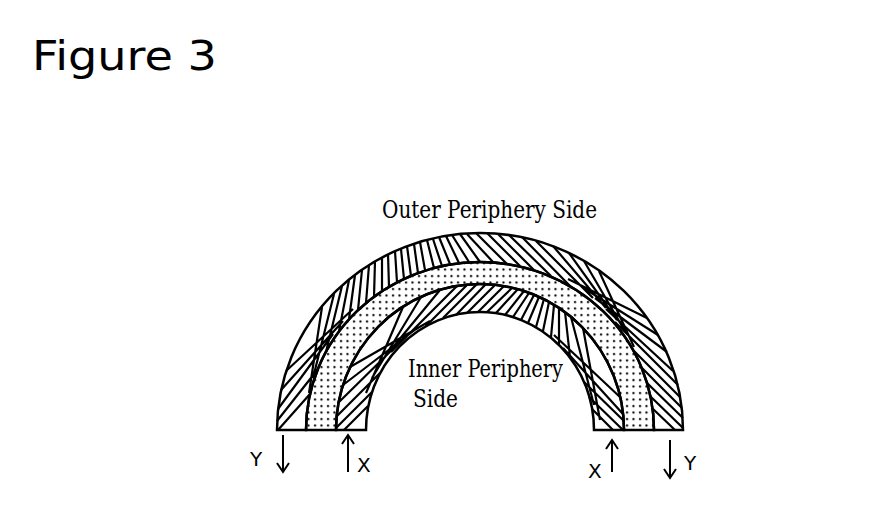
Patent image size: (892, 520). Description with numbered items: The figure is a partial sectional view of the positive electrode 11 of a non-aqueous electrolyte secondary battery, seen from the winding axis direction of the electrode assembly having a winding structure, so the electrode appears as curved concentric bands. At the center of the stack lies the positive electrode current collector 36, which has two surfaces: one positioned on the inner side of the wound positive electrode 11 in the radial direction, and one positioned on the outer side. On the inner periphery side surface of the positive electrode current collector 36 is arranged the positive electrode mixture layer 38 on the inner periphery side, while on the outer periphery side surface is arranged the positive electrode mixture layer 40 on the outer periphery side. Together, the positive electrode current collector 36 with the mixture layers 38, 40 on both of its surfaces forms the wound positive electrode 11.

The positive electrode 11 is at (309, 230).
The positive electrode current collector 36 is at (615, 335).
The positive electrode mixture layer on an inner periphery side 38 is at (567, 303).
The positive electrode mixture layer on an outer periphery side 40 is at (672, 365).